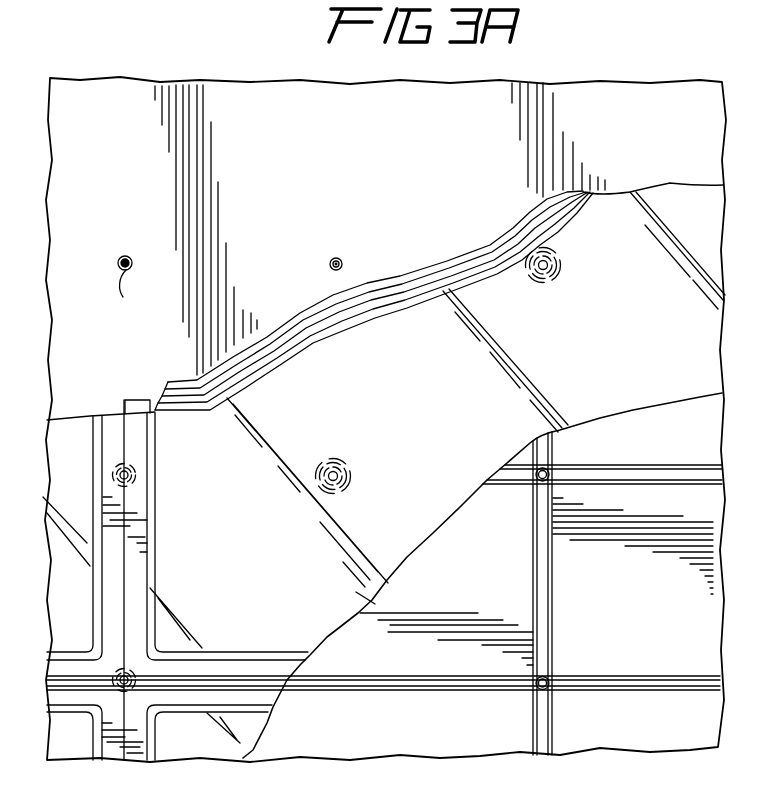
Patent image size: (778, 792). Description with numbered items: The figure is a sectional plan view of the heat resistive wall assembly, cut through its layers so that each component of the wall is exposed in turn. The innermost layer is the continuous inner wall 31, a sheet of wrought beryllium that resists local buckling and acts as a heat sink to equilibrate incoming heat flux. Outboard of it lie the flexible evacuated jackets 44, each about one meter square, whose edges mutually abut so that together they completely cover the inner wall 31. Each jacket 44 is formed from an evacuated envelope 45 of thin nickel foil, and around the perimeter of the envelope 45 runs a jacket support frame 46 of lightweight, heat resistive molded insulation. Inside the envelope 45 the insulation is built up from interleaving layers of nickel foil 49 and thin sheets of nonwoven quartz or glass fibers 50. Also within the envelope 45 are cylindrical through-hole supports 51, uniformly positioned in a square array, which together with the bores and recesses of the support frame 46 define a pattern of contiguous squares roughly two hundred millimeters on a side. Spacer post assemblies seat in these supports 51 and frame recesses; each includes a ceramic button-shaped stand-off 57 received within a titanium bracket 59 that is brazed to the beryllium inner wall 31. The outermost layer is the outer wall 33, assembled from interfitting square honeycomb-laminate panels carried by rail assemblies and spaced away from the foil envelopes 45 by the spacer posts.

The inner wall 31 is at (406, 168).
The outer wall 33 is at (653, 607).
The flexible evacuated jacket 44 is at (420, 379).
The evacuated envelope 45 is at (297, 353).
The jacket support frame 46 is at (135, 402).
The nickel foil 49 is at (381, 306).
The nonwoven quartz or glass fiber sheets 50 is at (448, 284).
The through-hole support 51 is at (545, 283).
The button-shaped stand-off 57 is at (136, 293).
The titanium bracket 59 is at (147, 245).